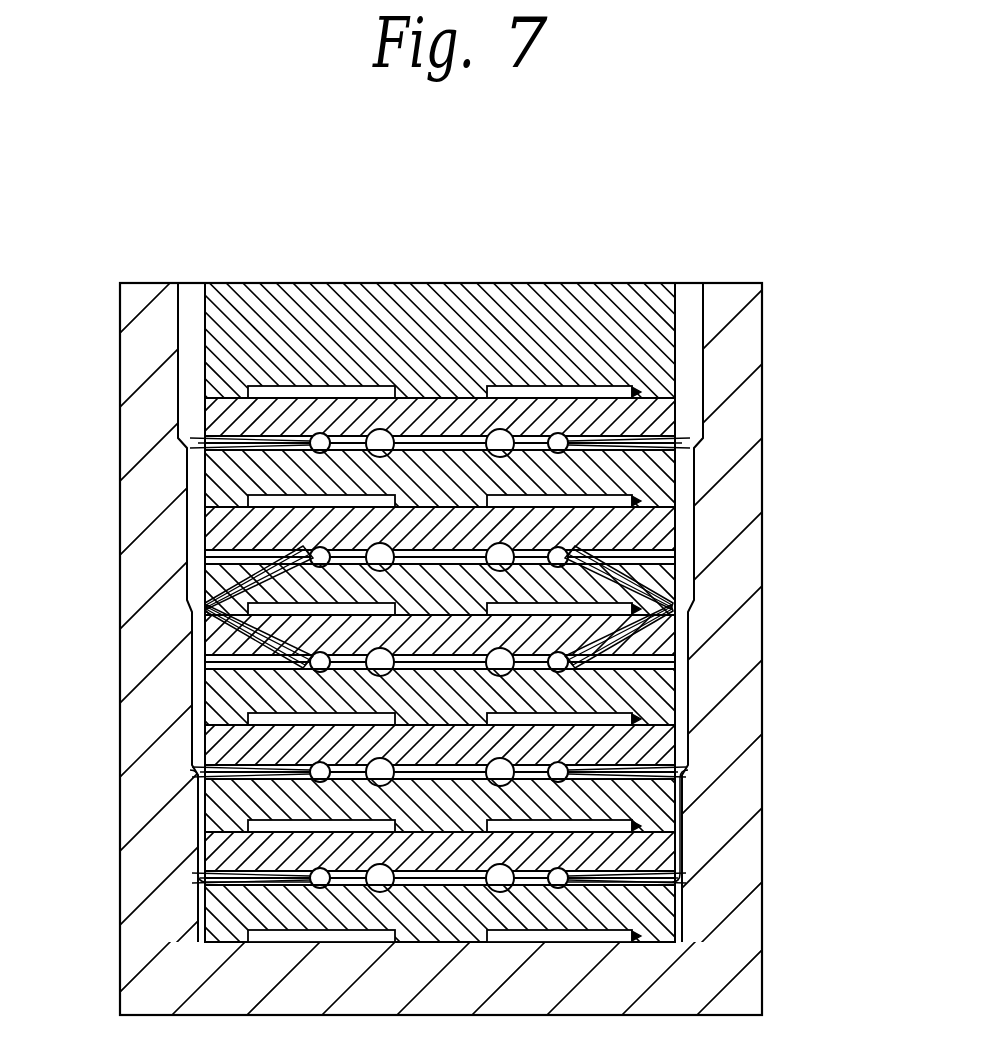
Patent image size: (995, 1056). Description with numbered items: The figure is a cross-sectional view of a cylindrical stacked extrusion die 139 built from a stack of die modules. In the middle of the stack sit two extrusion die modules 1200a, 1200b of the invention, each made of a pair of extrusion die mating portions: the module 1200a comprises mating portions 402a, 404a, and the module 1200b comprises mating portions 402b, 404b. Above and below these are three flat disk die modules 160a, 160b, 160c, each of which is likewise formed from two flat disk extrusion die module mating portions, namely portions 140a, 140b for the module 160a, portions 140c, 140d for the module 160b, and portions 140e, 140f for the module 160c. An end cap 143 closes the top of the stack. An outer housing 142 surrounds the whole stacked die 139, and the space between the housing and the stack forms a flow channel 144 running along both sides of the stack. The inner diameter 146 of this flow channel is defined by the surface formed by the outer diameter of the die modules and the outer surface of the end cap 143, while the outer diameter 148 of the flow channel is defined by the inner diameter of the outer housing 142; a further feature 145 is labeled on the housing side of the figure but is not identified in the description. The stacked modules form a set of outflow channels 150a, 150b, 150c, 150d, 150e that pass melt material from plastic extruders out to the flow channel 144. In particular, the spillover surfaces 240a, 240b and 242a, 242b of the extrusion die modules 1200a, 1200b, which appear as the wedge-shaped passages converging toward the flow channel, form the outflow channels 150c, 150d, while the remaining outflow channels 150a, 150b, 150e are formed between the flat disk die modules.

The cylindrical stacked extrusion die 139 is at (755, 187).
The outer housing 142 is at (146, 292).
The end cap 143 is at (320, 302).
The flow channel 144 is at (197, 298).
The right channel 145 is at (696, 283).
The inner diameter 146 is at (207, 355).
The outer diameter 148 is at (205, 350).
The flat disk extrusion die module mating portion 140a is at (663, 910).
The flat disk extrusion die module mating portion 140b is at (663, 852).
The flat disk extrusion die module mating portion 140c is at (663, 805).
The flat disk extrusion die module mating portion 140d is at (663, 742).
The flat disk extrusion die module mating portion 140e is at (665, 470).
The flat disk extrusion die module mating portion 140f is at (663, 413).
The flat disk die module 160a is at (497, 528).
The flat disk die module 160b is at (497, 528).
The flat disk die module 160c is at (497, 528).
The outflow channel 150a is at (192, 882).
The outflow channel 150b is at (192, 772).
The outflow channel 150c is at (206, 609).
The outflow channel 150d is at (206, 607).
The outflow channel 150e is at (205, 440).
The extrusion die mating portion 402a is at (660, 690).
The extrusion die mating portion 402b is at (658, 533).
The extrusion die mating portion 404a is at (660, 640).
The extrusion die mating portion 404b is at (660, 585).
The extrusion die module 1200a is at (497, 528).
The extrusion die module 1200b is at (497, 528).
The spillover surface 240a is at (206, 616).
The spillover surface 240b is at (205, 600).
The spillover surface 242a is at (206, 612).
The spillover surface 242b is at (206, 604).